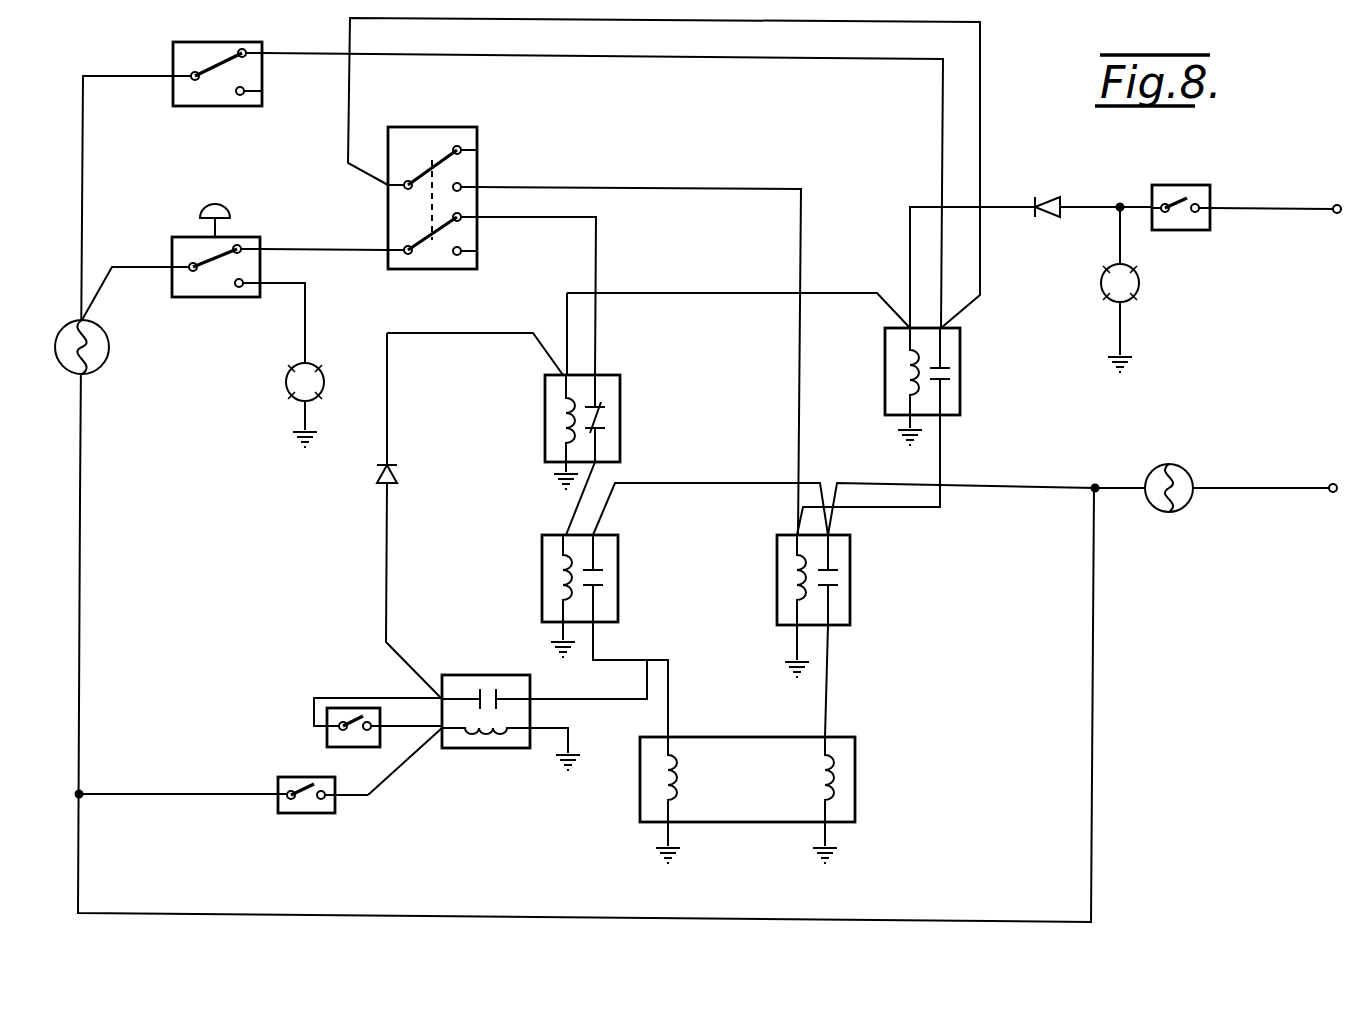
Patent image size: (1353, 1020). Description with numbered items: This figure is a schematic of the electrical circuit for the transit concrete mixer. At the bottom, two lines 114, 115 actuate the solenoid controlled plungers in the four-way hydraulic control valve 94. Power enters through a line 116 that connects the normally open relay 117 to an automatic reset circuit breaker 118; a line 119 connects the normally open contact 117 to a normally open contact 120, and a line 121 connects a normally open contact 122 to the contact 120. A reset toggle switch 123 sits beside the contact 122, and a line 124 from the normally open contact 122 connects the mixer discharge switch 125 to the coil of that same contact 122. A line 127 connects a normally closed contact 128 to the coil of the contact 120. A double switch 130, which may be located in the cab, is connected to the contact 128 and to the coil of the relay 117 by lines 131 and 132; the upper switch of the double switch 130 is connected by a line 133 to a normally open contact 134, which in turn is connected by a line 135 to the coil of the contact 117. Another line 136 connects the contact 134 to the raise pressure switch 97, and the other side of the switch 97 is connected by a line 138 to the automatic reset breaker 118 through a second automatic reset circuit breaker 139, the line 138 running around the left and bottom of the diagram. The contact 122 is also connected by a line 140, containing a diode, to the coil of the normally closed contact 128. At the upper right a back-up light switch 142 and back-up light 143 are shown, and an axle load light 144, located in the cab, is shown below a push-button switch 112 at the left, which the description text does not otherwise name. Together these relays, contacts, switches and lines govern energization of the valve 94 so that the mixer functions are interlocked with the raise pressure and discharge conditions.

The 4-way hydraulic control valve 94 is at (858, 781).
The raise pressure switch 97 is at (216, 60).
The push-button switch 112 is at (208, 292).
The line 114 is at (670, 710).
The line 115 is at (830, 684).
The line 116 is at (1057, 490).
The normally open relay 117 is at (853, 584).
The automatic reset circuit breaker 118 is at (1176, 511).
The line 119 is at (755, 452).
The normally open contact 120 is at (620, 578).
The line 121 is at (650, 640).
The normally open contact 122 is at (506, 645).
The reset toggle switch 123 is at (357, 715).
The line 124 is at (402, 767).
The mixer discharge switch 125 is at (307, 784).
The line 127 is at (574, 508).
The normally closed contact 128 is at (607, 418).
The switch 130 is at (416, 203).
The line 131 is at (598, 248).
The line 132 is at (762, 160).
The line 133 is at (982, 76).
The normally open contact 134 is at (962, 371).
The line 135 is at (943, 462).
The line 136 is at (836, 62).
The line 138 is at (85, 179).
The second automatic reset circuit breaker 139 is at (108, 348).
The line 140 is at (390, 414).
The back-up light switch 142 is at (1178, 200).
The back-up light 143 is at (1142, 286).
The axle load light 144 is at (287, 385).